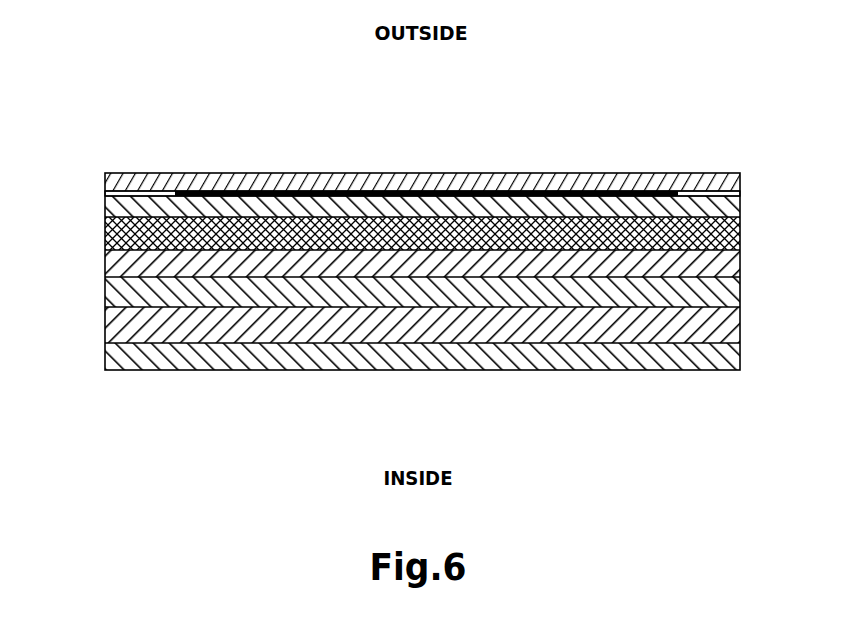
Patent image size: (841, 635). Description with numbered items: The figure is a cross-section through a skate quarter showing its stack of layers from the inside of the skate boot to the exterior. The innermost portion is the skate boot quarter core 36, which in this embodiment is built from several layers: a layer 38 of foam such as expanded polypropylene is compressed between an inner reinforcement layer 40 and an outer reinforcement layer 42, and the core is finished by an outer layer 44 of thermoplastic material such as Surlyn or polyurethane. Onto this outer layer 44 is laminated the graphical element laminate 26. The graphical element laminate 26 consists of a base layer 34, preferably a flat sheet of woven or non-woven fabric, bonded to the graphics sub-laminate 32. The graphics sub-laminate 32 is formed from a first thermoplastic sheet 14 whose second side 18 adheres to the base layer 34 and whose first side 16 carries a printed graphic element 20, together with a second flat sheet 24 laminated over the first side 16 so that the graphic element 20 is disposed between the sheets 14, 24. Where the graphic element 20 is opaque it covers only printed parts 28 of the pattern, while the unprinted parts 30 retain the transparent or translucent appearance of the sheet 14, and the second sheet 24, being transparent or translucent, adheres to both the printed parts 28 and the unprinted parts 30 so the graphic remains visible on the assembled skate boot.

The sheet 14 is at (105, 210).
The first side 16 is at (105, 195).
The second side 18 is at (105, 215).
The graphic element 20 is at (280, 183).
The second flat sheet 24 is at (105, 190).
The graphical element laminate 26 is at (790, 172).
The parts 28 is at (222, 187).
The parts 30 is at (143, 182).
The graphics sub-laminate 32 is at (745, 173).
The base layer 34 is at (105, 234).
The skate boot quarter core 36 is at (765, 252).
The layer of foam 38 is at (105, 328).
The inner reinforcement layer 40 is at (105, 358).
The outer reinforcement layer 42 is at (105, 295).
The outer layer 44 is at (105, 266).